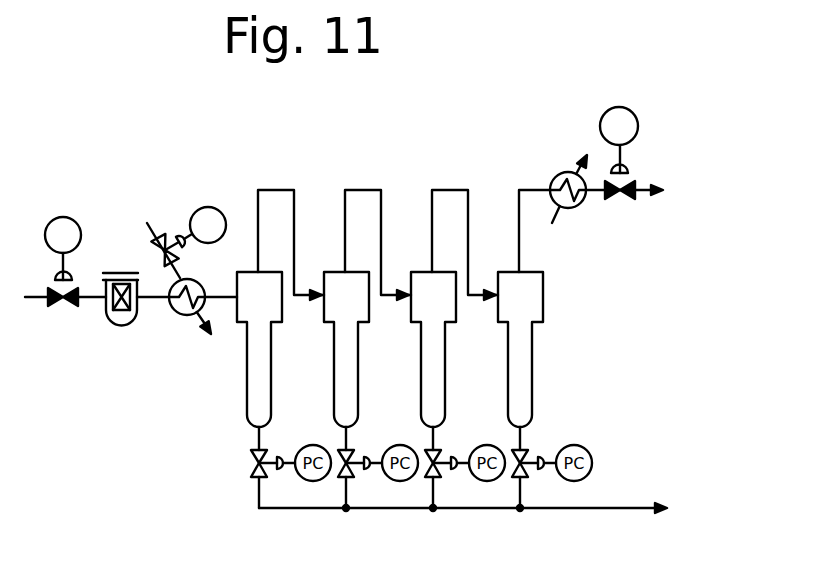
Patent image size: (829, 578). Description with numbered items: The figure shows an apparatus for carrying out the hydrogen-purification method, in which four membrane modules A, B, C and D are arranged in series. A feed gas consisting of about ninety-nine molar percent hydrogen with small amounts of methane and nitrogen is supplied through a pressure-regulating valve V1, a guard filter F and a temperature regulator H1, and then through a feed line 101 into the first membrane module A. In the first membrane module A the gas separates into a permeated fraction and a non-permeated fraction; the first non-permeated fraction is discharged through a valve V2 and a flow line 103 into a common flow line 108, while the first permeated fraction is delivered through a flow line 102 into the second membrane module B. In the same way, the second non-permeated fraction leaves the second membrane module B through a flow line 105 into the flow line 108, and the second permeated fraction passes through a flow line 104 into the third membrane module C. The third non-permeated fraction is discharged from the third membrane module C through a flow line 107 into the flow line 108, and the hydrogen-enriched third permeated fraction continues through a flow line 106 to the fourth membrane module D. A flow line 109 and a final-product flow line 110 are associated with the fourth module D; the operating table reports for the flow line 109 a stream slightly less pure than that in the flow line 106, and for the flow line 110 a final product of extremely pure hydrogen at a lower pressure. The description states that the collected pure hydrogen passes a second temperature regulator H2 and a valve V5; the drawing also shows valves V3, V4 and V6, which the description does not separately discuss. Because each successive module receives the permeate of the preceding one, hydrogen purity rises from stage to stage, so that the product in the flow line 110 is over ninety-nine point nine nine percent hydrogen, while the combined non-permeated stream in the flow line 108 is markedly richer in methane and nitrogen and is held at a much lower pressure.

The feed line 101 is at (216, 295).
The flow line 102 is at (256, 220).
The flow line 103 is at (257, 440).
The flow line 104 is at (343, 220).
The flow line 105 is at (344, 440).
The flow line 106 is at (430, 222).
The flow line 107 is at (431, 440).
The flow line 108 is at (574, 511).
The flow line 109 is at (518, 440).
The flow line 110 is at (517, 222).
The first membrane module A is at (247, 380).
The second membrane module B is at (334, 380).
The third membrane module C is at (421, 380).
The membrane module D is at (508, 380).
The guard filter F is at (113, 327).
The temperature regulator H1 is at (176, 317).
The temperature regulator H2 is at (557, 174).
The pressure-regulating valve V1 is at (60, 307).
The valve V2 is at (254, 476).
The discharge valve of vessel B V3 is at (342, 478).
The discharge valve of vessel C V4 is at (430, 478).
The valve V5 is at (517, 478).
The pressure control valve V6 is at (625, 201).